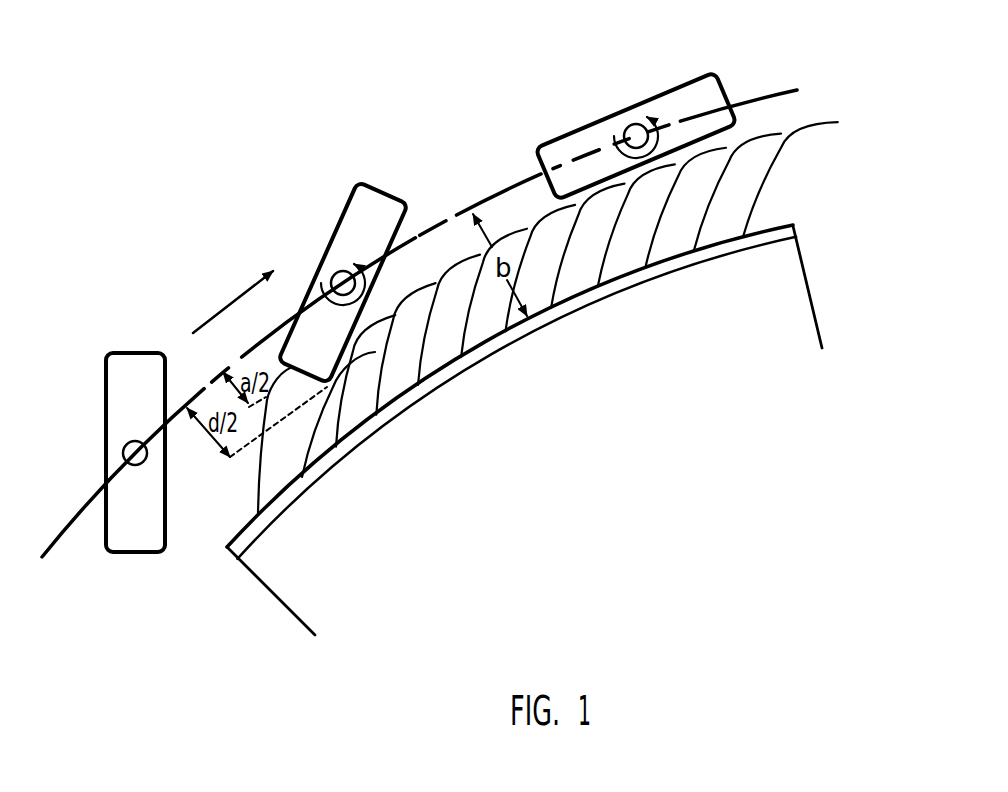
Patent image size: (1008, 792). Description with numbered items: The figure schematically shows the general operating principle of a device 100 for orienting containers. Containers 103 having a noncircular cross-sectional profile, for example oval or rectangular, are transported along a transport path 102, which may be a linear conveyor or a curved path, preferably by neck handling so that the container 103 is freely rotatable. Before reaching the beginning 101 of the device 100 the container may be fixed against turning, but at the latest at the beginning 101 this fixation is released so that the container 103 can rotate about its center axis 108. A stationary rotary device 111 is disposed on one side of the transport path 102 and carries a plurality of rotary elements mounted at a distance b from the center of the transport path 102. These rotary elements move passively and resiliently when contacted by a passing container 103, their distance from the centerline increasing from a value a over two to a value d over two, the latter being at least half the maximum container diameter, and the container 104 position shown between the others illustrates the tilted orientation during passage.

The device for orienting containers 100 is at (293, 93).
The beginning of the device 101 is at (288, 608).
The transport path 102 is at (73, 527).
The container 103 is at (150, 552).
The machining tool in tilted position 104 is at (343, 282).
The center axis 108 is at (622, 139).
The rotary device 111 is at (535, 382).